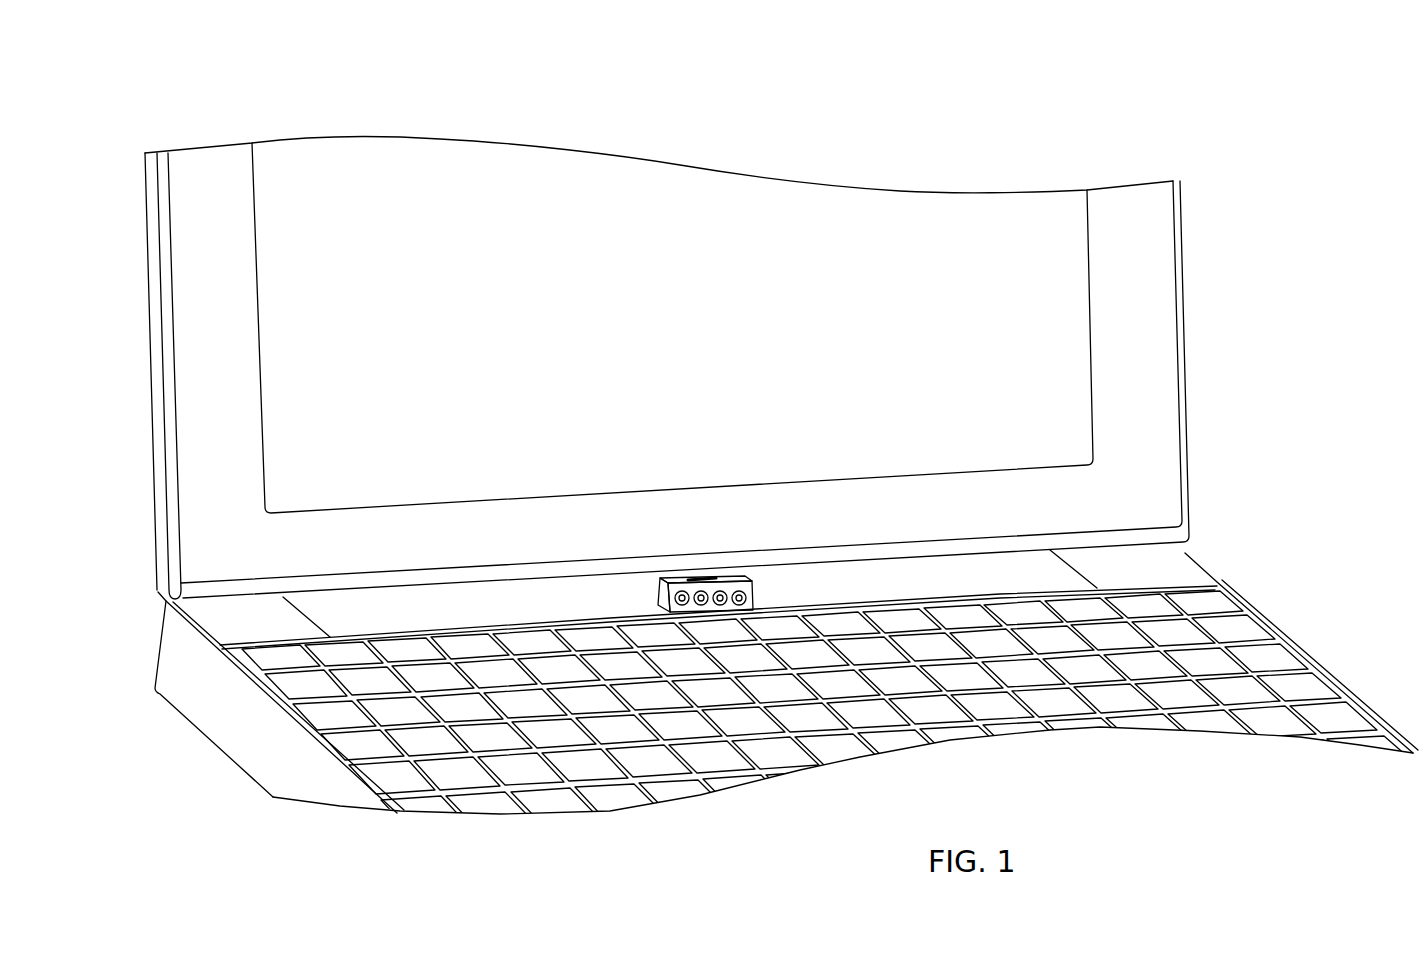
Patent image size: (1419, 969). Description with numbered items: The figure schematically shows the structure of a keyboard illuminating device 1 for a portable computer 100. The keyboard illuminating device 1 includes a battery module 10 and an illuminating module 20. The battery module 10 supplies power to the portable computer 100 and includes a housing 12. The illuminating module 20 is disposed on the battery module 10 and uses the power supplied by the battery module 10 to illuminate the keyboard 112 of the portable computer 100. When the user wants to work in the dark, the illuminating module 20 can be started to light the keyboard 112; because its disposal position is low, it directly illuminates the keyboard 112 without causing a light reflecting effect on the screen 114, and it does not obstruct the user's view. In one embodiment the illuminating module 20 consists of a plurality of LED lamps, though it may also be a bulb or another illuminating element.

The keyboard illuminating device 1 is at (327, 604).
The battery module 10 is at (766, 466).
The portable computer 100 is at (733, 323).
The keyboard 112 is at (385, 740).
The screen 114 is at (452, 176).
The housing 12 is at (925, 580).
The illuminating module 20 is at (730, 607).